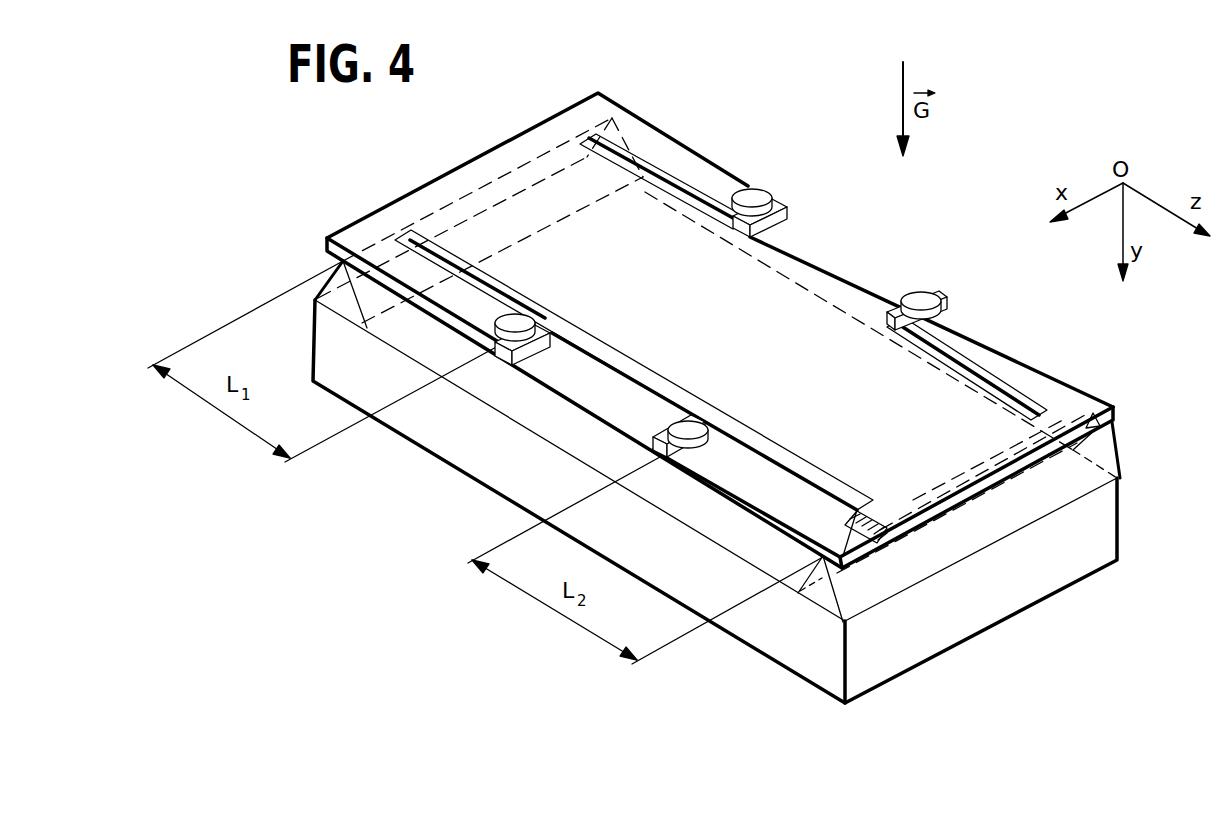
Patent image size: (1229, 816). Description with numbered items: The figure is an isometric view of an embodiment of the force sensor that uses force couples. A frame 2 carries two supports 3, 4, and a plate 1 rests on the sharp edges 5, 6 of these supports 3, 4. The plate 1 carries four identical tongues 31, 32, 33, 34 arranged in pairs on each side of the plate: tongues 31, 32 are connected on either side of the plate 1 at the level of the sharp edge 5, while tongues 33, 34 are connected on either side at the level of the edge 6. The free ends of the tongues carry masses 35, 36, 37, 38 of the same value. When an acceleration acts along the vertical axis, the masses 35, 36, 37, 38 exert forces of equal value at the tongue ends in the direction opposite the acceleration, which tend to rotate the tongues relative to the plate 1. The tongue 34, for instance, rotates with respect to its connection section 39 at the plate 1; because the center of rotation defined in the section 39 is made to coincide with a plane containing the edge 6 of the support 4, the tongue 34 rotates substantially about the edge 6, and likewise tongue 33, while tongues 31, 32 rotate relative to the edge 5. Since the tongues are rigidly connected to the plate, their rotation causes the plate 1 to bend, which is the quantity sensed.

The plate 1 is at (795, 292).
The frame 2 is at (470, 455).
The support 3 is at (345, 308).
The support 4 is at (838, 594).
The sharp edge 5 is at (440, 212).
The edge 6 is at (1072, 422).
The tongue 31 is at (665, 158).
The tongue 32 is at (458, 310).
The tongue 33 is at (1010, 360).
The tongue 34 is at (760, 492).
The mass 35 is at (757, 200).
The mass 36 is at (525, 330).
The mass 37 is at (930, 303).
The mass 38 is at (680, 432).
The connection section 39 is at (868, 515).